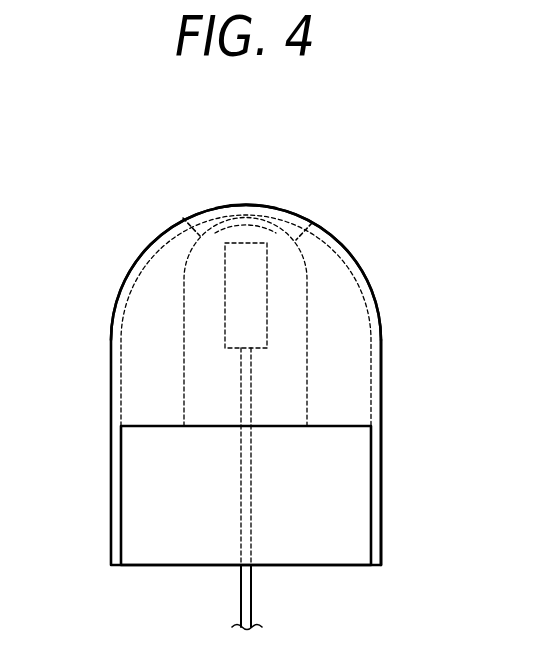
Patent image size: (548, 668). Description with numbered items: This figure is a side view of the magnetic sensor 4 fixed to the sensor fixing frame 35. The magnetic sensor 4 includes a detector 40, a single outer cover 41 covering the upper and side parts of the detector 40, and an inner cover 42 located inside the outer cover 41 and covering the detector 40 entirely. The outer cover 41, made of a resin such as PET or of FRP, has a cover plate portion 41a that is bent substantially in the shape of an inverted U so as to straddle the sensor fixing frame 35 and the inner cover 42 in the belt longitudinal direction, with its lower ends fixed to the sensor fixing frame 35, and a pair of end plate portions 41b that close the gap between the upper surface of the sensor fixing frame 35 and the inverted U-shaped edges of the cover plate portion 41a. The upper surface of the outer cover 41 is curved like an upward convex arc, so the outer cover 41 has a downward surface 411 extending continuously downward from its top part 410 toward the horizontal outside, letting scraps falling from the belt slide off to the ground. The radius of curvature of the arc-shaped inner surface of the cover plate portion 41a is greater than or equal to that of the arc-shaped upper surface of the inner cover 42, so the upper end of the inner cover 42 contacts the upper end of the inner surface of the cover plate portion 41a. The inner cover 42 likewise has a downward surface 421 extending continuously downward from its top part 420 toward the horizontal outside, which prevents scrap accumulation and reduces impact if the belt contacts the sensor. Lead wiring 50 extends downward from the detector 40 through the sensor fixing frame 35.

The magnetic sensor 4 is at (257, 381).
The sensor fixing frame 35 is at (178, 521).
The detector 40 is at (225, 297).
The outer cover 41 is at (250, 348).
The cover plate portion 41a is at (382, 338).
The end plate portion 41b is at (142, 355).
The inner cover 42 is at (296, 279).
The lead wire 50 is at (248, 585).
The top part 410 is at (245, 205).
The downward surface 411 is at (155, 238).
The top part 420 is at (252, 215).
The downward surface 421 is at (183, 218).